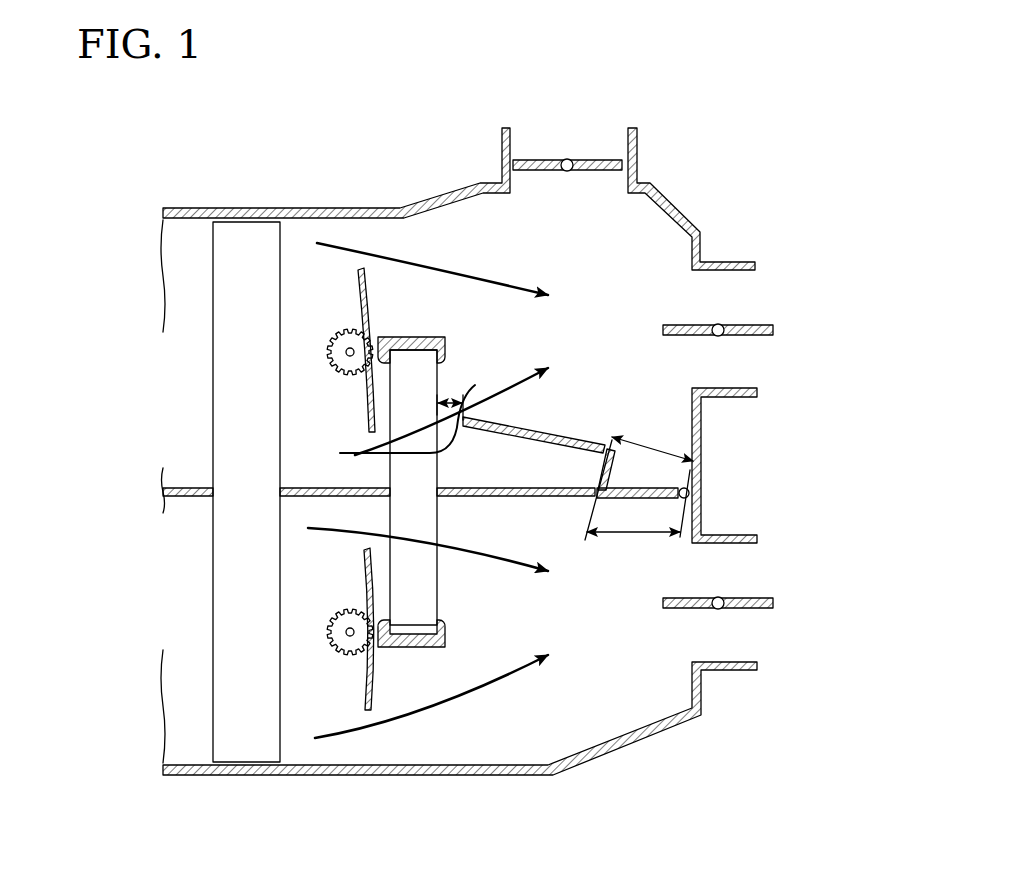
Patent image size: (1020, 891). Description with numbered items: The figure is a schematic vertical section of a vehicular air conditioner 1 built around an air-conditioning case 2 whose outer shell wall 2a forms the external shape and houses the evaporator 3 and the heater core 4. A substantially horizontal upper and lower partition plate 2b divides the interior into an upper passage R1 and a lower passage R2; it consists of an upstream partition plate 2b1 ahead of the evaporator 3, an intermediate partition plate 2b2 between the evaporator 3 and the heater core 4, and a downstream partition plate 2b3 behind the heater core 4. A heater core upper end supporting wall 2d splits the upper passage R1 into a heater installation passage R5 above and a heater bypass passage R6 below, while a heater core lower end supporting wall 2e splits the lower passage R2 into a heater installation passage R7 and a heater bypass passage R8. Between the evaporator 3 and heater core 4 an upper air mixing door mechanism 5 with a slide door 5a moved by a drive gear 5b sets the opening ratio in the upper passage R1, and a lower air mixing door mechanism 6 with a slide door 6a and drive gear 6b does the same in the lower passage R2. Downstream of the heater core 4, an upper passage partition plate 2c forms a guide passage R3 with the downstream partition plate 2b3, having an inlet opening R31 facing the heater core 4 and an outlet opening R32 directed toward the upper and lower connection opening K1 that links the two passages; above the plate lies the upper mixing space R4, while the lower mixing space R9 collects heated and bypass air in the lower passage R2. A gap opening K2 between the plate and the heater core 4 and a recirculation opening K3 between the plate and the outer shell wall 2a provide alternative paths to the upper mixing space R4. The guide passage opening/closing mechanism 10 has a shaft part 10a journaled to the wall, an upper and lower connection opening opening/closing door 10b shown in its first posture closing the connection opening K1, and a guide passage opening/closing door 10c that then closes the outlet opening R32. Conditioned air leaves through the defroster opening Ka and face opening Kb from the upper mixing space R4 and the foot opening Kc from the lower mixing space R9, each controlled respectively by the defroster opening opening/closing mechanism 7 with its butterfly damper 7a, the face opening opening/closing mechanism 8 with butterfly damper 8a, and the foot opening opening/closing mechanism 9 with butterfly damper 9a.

The vehicular air conditioner 1 is at (484, 411).
The air-conditioning case 2 is at (448, 435).
The outer shell wall 2a is at (322, 208).
The upper and lower partition plate 2b is at (367, 478).
The upstream partition plate 2b1 is at (190, 485).
The intermediate partition plate 2b2 is at (318, 498).
The downstream partition plate 2b3 is at (520, 498).
The upper passage partition plate 2c is at (555, 430).
The heater core upper end supporting wall 2d is at (432, 340).
The heater core lower end supporting wall 2e is at (447, 645).
The evaporator 3 is at (237, 235).
The heater core 4 is at (403, 360).
The upper air mixing door mechanism 5 is at (330, 342).
The slide door 5a is at (366, 290).
The drive gear 5b is at (345, 352).
The lower air mixing door mechanism 6 is at (331, 624).
The slide door 6a is at (368, 590).
The drive gear 6b is at (345, 642).
The defroster opening opening/closing mechanism 7 is at (567, 134).
The butterfly damper 7a is at (540, 170).
The face opening opening/closing mechanism 8 is at (746, 319).
The butterfly damper 8a is at (700, 330).
The foot opening opening/closing mechanism 9 is at (746, 632).
The butterfly damper 9a is at (700, 605).
The guide passage opening/closing mechanism 10 is at (696, 470).
The shaft part 10a is at (684, 498).
The upper and lower connection opening opening/closing door 10b is at (655, 500).
The guide passage opening/closing door 10c is at (610, 450).
The upper and lower connection opening K1 is at (600, 545).
The gap opening K2 is at (455, 397).
The recirculation opening K3 is at (648, 440).
The defroster opening Ka is at (505, 140).
The face opening Kb is at (742, 267).
The foot opening Kc is at (748, 540).
The upper passage R1 is at (200, 297).
The lower passage R2 is at (200, 710).
The guide passage R3 is at (500, 455).
The inlet opening R31 is at (460, 475).
The outlet opening R32 is at (580, 473).
The upper mixing space R4 is at (630, 240).
The heater installation passage R5 is at (422, 383).
The heater bypass passage R6 is at (425, 235).
The heater installation passage R7 is at (415, 578).
The heater bypass passage R8 is at (435, 735).
The lower mixing space R9 is at (630, 700).